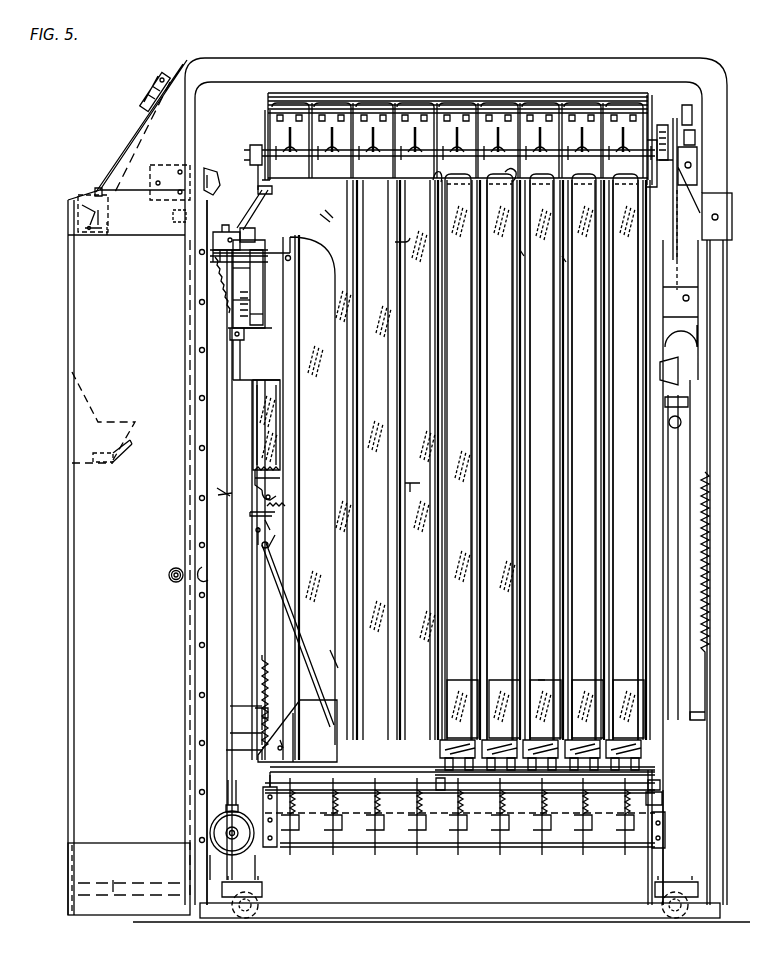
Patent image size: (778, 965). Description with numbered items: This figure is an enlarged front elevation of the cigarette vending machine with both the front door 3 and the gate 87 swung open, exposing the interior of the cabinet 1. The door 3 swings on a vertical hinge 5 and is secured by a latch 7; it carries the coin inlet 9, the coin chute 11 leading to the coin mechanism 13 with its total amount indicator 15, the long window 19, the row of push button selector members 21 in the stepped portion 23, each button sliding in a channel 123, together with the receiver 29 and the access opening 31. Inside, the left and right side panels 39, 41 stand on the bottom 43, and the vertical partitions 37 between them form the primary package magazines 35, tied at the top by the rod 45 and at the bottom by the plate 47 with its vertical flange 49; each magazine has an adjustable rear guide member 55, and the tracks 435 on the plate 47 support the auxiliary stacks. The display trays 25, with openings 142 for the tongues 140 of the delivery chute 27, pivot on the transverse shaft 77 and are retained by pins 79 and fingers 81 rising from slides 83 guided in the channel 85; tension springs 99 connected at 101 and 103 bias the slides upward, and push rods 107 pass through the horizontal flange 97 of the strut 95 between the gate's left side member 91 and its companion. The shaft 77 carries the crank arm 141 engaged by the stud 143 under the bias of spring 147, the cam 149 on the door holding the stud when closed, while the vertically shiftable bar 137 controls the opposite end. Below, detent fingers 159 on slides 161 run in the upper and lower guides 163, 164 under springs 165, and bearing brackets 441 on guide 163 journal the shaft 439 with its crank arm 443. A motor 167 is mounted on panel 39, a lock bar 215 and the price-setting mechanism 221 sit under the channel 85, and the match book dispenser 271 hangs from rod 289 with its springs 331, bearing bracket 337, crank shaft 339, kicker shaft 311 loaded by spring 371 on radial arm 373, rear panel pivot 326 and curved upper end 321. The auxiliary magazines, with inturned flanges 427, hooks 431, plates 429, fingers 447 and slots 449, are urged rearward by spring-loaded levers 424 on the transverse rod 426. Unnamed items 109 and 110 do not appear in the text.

The cabinet 1 is at (440, 51).
The front door 3 is at (76, 656).
The vertical hinge 5 is at (204, 600).
The latch 7 is at (168, 579).
The coin inlet 9 is at (152, 97).
The coin chute 11 is at (695, 113).
The coin mechanism 13 is at (712, 459).
The total amount indicator 15 is at (662, 125).
The window 19 is at (129, 139).
The push button selector members 21 is at (84, 200).
The stepped portion 23 is at (99, 188).
The display tray 25 is at (320, 104).
The delivery chute 27 is at (262, 380).
The receiver 29 is at (103, 463).
The access opening 31 is at (62, 424).
The primary package magazine 35 is at (410, 483).
The vertical partitions 37 is at (350, 206).
The left side panel 39 is at (261, 779).
The right side panel 41 is at (651, 716).
The bottom 43 is at (422, 919).
The rod 45 is at (438, 173).
The plate 47 is at (395, 762).
The vertical flange 49 is at (380, 764).
The adjustable rear guide member 55 is at (396, 242).
The transverse shaft 77 is at (262, 152).
The pins 79 is at (287, 135).
The fingers 81 is at (257, 192).
The slides 83 is at (250, 314).
The channel 85 is at (230, 333).
The gate 87 is at (219, 497).
The left vertical side member 91 is at (258, 633).
The angle-shaped strut 95 is at (247, 715).
The horizontal flange 97 is at (235, 756).
The tension springs 99 is at (233, 270).
The spring connection to slides 101 is at (233, 300).
The spring connection to channel 103 is at (210, 250).
The push rods 107 is at (240, 352).
The block 109 is at (212, 240).
The lever 110 is at (213, 236).
The channel 123 is at (107, 236).
The vertically shiftable bar 137 is at (650, 94).
The tongues 140 is at (274, 494).
The crank arm 141 is at (262, 148).
The openings 142 is at (338, 114).
The stud 143 is at (253, 155).
The spring 147 is at (258, 176).
The cam 149 is at (212, 174).
The detent fingers 159 is at (337, 832).
The slide 161 is at (374, 855).
The upper guide 163 is at (372, 786).
The lower guide 164 is at (435, 847).
The springs 165 is at (376, 798).
The motor 167 is at (210, 830).
The lock bar 215 is at (213, 260).
The price-setting mechanism 221 is at (266, 300).
The match book dispenser 271 is at (341, 672).
The horizontal transverse rod 289 is at (290, 261).
The kicker shaft 311 is at (284, 733).
The curved upper end of rearward guide panel 321 is at (330, 217).
The pivot 326 is at (297, 734).
The tension springs 331 is at (282, 450).
The bearing bracket 337 is at (262, 476).
The crank shaft 339 is at (271, 501).
The spring 371 is at (230, 706).
The radial arm 373 is at (230, 733).
The spring-loaded levers 424 is at (326, 703).
The transverse rod 426 is at (268, 545).
The inturned flanges 427 is at (563, 257).
The plates 429 is at (643, 748).
The hook 431 is at (511, 172).
The tracks 435 is at (649, 766).
The transverse shaft 439 is at (660, 810).
The bearing brackets 441 is at (436, 783).
The crank arm 443 is at (657, 797).
The fingers 447 is at (657, 783).
The slot 449 is at (540, 680).